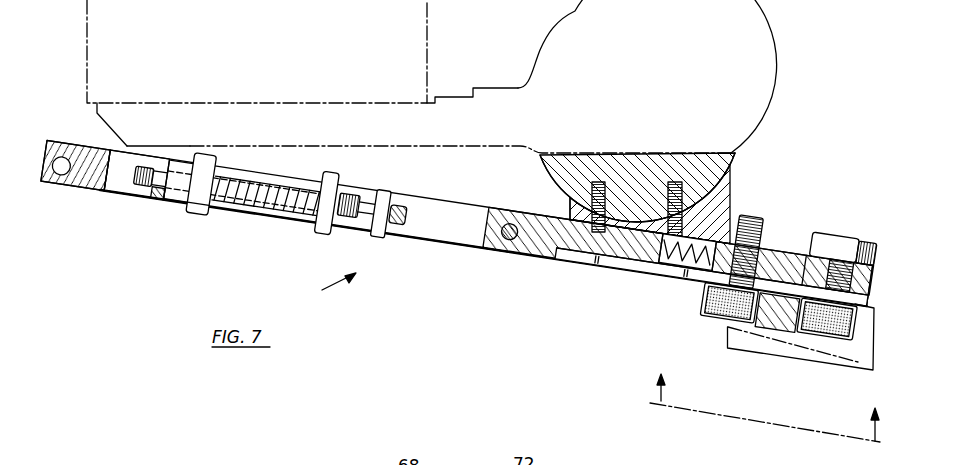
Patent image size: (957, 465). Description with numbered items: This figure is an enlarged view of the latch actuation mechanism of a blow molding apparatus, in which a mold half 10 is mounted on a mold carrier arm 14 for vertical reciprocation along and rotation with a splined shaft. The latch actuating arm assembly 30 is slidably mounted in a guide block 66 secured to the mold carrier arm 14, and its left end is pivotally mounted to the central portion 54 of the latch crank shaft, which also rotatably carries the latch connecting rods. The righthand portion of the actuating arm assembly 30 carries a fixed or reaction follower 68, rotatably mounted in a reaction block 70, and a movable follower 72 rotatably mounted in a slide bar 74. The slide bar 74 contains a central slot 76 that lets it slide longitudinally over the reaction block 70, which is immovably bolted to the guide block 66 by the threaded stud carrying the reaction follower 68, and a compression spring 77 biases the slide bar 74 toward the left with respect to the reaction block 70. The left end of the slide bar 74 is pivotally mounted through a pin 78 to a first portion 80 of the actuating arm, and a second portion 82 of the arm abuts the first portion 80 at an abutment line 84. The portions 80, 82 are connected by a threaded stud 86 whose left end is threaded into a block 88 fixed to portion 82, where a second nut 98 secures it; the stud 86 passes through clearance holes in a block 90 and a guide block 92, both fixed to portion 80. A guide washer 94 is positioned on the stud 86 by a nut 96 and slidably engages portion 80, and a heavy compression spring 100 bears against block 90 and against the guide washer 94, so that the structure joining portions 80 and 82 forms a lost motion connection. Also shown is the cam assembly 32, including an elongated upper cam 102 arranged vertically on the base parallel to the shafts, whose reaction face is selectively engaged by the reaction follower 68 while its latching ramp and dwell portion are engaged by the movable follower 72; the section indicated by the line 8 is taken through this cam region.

The mold half 10 is at (321, 62).
The mold carrier arm 14 is at (412, 149).
The latch actuating arm assembly 30 is at (326, 290).
The cam assembly 32 is at (771, 362).
The central portion of crank shaft 54 is at (66, 178).
The guide block 66 is at (570, 205).
The reaction follower 68 is at (710, 312).
The reaction block 70 is at (770, 258).
The movable follower 72 is at (848, 328).
The slide bar 74 is at (622, 265).
The central slot 76 is at (807, 260).
The compression spring 77 is at (668, 272).
The pin 78 is at (513, 240).
The first portion of actuating arm 80 is at (443, 240).
The second portion of actuating arm 82 is at (121, 188).
The abutment line 84 is at (204, 156).
The threaded stud 86 is at (144, 172).
The block 88 is at (185, 197).
The block 90 is at (213, 215).
The guide block 92 is at (380, 230).
The guide washer 94 is at (327, 228).
The nut 96 is at (345, 195).
The second nut 98 is at (156, 200).
The heavy compression spring 100 is at (280, 193).
The upper cam 102 is at (778, 322).
The section line 8- 8 is at (765, 419).